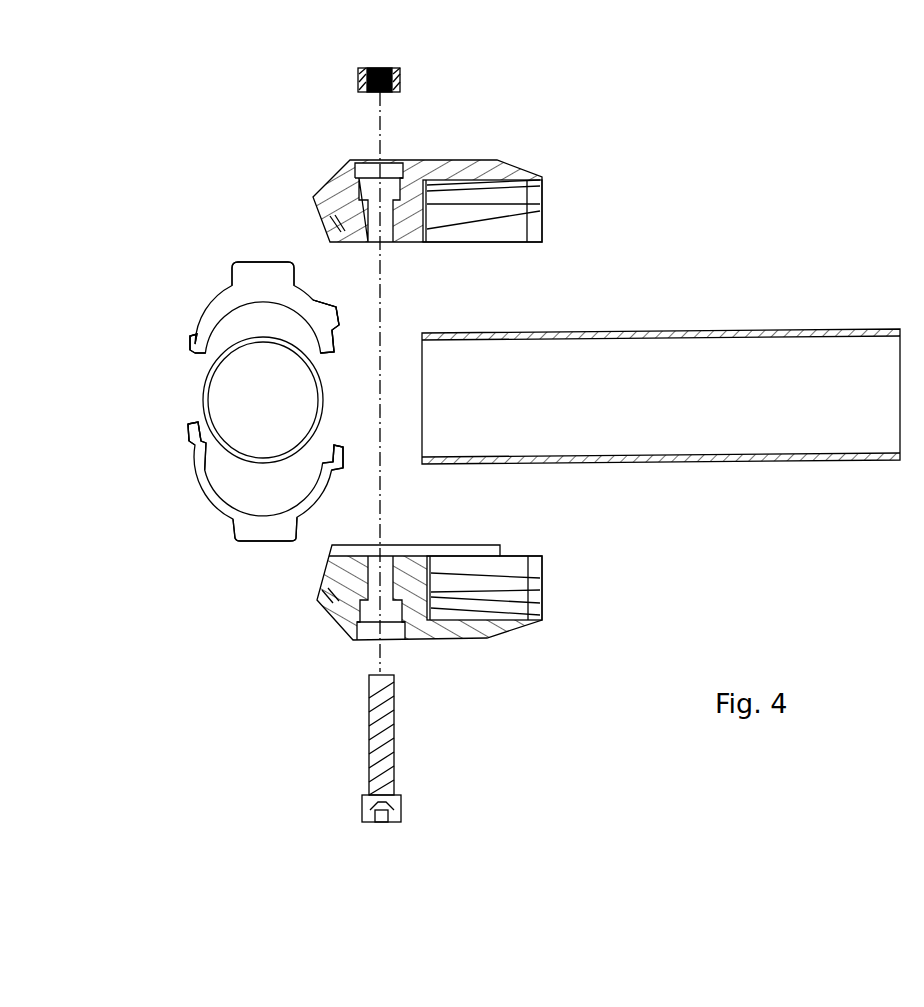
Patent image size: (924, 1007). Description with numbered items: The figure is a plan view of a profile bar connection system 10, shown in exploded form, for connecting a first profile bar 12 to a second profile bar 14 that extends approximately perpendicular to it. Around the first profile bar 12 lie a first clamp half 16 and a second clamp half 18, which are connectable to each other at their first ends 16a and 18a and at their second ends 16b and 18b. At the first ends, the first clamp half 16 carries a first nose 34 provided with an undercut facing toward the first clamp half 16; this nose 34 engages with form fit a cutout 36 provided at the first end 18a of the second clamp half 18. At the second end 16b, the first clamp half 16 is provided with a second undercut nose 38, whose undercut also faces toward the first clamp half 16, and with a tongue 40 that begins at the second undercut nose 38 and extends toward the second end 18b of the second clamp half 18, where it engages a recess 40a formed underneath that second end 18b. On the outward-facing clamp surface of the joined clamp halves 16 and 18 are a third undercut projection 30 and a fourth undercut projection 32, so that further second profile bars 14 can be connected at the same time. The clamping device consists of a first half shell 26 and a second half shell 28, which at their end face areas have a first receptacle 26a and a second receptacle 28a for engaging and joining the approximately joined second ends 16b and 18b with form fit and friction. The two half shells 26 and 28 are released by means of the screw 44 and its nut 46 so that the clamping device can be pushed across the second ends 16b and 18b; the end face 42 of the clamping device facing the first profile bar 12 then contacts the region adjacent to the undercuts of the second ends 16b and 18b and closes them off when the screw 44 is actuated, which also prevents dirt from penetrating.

The profile bar connection system 10 is at (668, 176).
The first profile bar 12 is at (240, 340).
The second profile bar 14 is at (800, 331).
The first clamp half 16 is at (248, 291).
The first end of the first clamp half 16a is at (193, 351).
The second end of the first clamp half 16b is at (326, 336).
The second clamp half 18 is at (247, 500).
The first end of the second clamp half 18a is at (193, 466).
The second end of the second clamp half 18b is at (341, 473).
The first half shell 26 is at (411, 345).
The first receptacle 26a is at (352, 190).
The second half shell 28 is at (414, 634).
The second receptacle 28a is at (327, 586).
The third undercut projection 30 is at (258, 272).
The fourth undercut projection 32 is at (267, 533).
The first nose 34 is at (189, 338).
The cutout 36 is at (190, 433).
The second undercut nose 38 is at (336, 311).
The tongue 40 is at (335, 353).
The recess 40a is at (324, 452).
The end face of the clamping device 42 is at (322, 203).
The screw 44 is at (388, 735).
The nut 46 is at (354, 78).